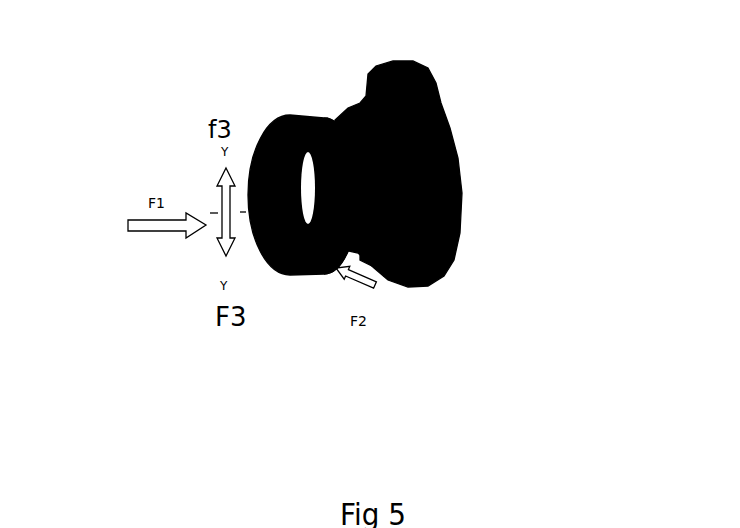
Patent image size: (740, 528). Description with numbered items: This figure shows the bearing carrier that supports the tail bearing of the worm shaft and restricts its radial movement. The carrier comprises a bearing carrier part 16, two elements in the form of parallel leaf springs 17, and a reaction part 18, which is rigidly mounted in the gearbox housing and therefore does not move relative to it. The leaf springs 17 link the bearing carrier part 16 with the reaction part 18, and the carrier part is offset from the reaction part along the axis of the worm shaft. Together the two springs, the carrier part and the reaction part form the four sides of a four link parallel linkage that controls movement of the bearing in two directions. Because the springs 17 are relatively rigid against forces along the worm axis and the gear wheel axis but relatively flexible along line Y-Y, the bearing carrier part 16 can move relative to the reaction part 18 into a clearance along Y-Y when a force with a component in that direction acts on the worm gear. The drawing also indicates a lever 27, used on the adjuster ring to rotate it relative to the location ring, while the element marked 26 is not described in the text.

The bearing carrier part 16 is at (322, 212).
The parallel leaf springs 17 is at (366, 259).
The reaction part 18 is at (452, 213).
The ring 26 is at (262, 158).
The lever 27 is at (290, 215).